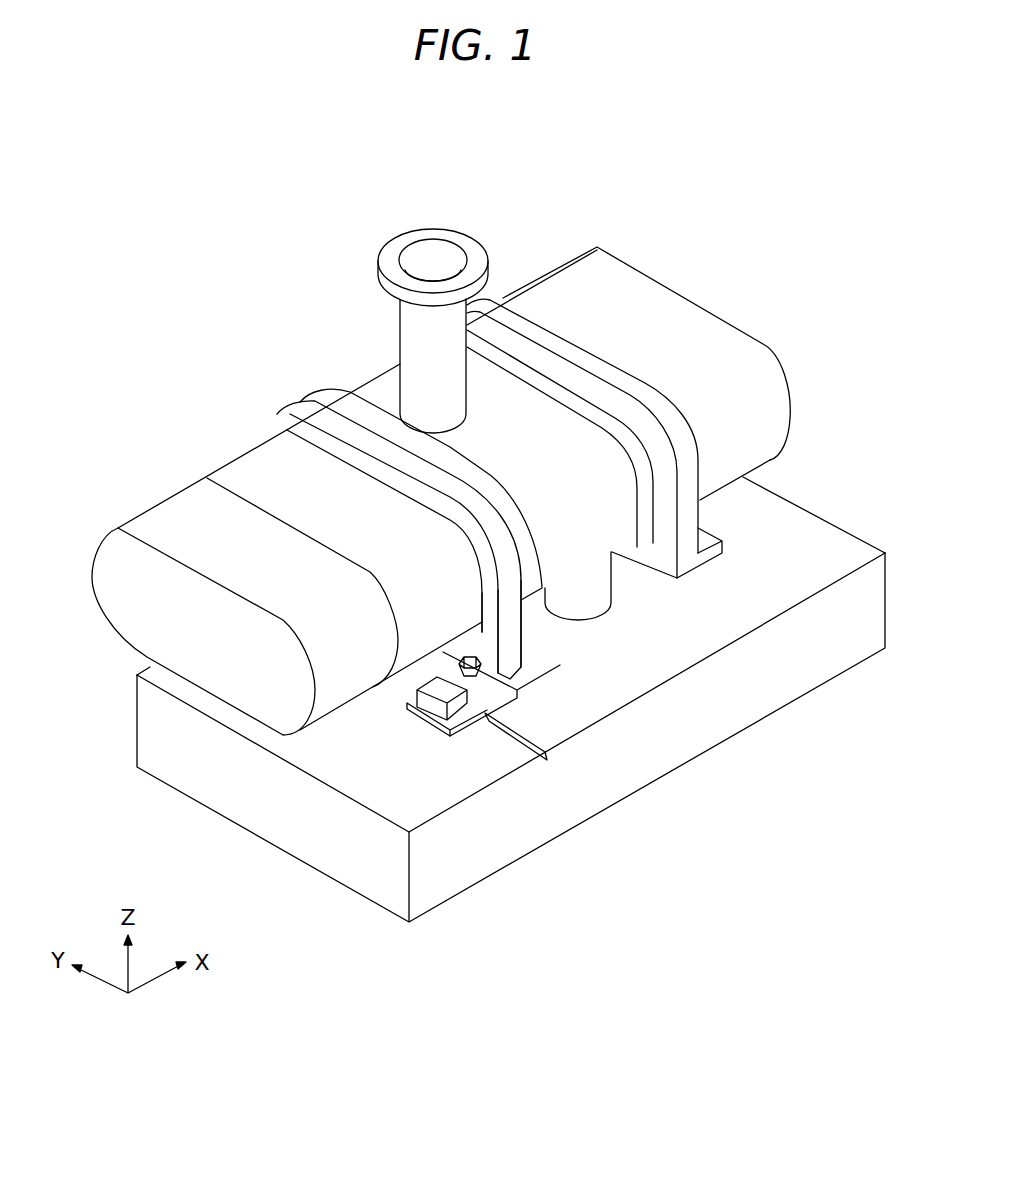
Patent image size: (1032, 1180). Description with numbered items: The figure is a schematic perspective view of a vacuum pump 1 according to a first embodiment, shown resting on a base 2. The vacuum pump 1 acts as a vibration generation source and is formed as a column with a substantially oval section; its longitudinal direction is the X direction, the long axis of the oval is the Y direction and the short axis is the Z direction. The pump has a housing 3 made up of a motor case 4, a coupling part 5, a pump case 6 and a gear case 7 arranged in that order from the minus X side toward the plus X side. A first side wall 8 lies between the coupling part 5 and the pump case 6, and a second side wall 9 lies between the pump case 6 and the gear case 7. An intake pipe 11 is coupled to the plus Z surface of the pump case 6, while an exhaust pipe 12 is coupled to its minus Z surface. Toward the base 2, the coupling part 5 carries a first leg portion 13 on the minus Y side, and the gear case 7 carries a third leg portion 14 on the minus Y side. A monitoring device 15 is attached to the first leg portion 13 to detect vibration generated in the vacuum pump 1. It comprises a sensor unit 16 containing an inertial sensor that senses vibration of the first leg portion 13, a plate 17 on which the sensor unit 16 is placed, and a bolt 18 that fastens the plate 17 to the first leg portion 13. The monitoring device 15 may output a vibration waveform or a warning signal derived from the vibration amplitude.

The vacuum pump 1 is at (745, 186).
The base 2 is at (848, 546).
The housing 3 is at (441, 460).
The motor case 4 is at (163, 515).
The coupling part 5 is at (241, 478).
The pump case 6 is at (378, 388).
The gear case 7 is at (600, 256).
The first side wall 8 is at (330, 395).
The second side wall 9 is at (513, 344).
The intake pipe 11 is at (433, 228).
The exhaust pipe 12 is at (600, 597).
The first leg portion 13 is at (512, 640).
The third leg portion 14 is at (690, 520).
The monitoring device 15 is at (474, 728).
The sensor unit 16 is at (440, 692).
The plate 17 is at (512, 682).
The bolt 18 is at (470, 655).